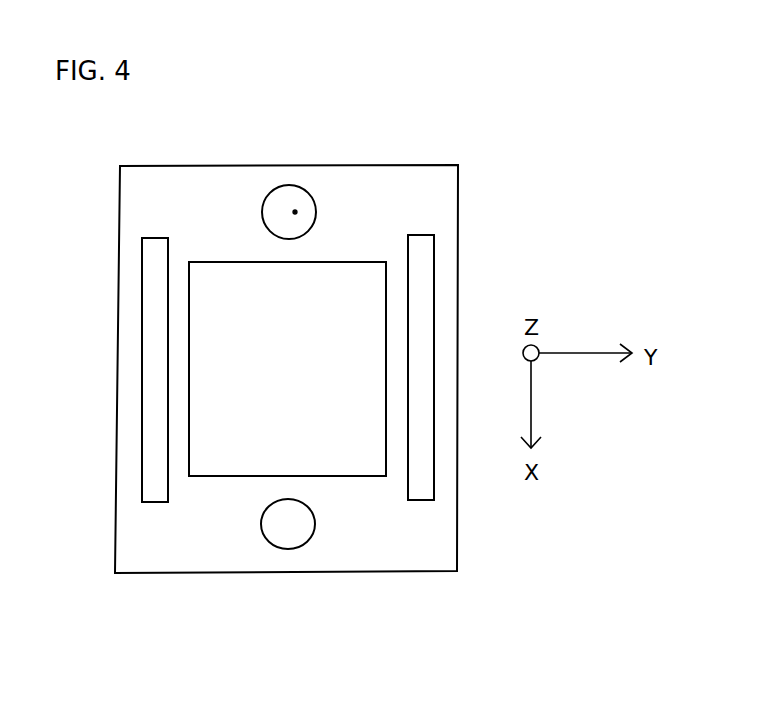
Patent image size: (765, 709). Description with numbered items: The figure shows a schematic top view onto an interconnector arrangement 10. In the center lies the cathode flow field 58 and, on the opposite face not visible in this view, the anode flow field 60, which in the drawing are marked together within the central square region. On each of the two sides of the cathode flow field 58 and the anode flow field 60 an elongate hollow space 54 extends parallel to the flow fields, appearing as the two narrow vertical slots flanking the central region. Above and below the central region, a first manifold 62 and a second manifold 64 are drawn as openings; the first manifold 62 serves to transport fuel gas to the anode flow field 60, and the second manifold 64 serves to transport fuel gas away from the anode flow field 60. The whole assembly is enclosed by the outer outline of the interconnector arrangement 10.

The interconnector arrangement 10 is at (540, 141).
The elongate hollow space 54 is at (157, 363).
The cathode flow field 58 is at (302, 388).
The anode flow field 60 is at (367, 388).
The first manifold 62 is at (295, 212).
The second manifold 64 is at (290, 525).